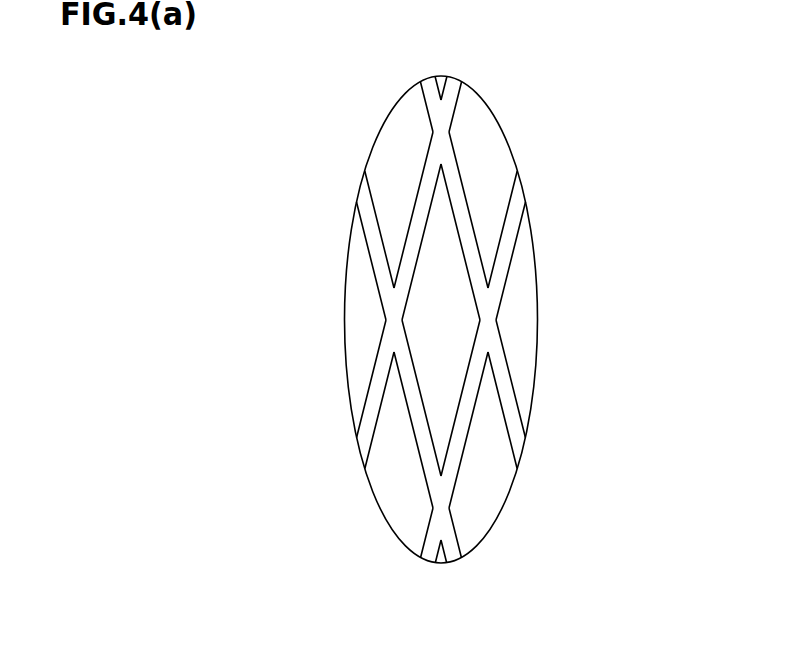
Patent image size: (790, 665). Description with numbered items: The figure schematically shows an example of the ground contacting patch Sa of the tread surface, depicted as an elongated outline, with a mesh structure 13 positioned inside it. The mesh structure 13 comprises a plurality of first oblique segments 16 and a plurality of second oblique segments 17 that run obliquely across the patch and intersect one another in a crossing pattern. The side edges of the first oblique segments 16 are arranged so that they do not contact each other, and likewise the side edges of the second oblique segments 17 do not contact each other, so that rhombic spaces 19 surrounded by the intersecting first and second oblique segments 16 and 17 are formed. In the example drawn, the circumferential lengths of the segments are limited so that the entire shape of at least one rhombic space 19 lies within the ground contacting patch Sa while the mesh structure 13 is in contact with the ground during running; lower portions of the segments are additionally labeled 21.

The mesh structure 13 is at (456, 317).
The first oblique segments 16 is at (423, 203).
The second oblique segments 17 is at (457, 203).
The ground contacting patch Sa is at (532, 243).
The rhombic space 19 is at (457, 315).
The lower crossing portions of strands 16 and 17 21 is at (417, 413).